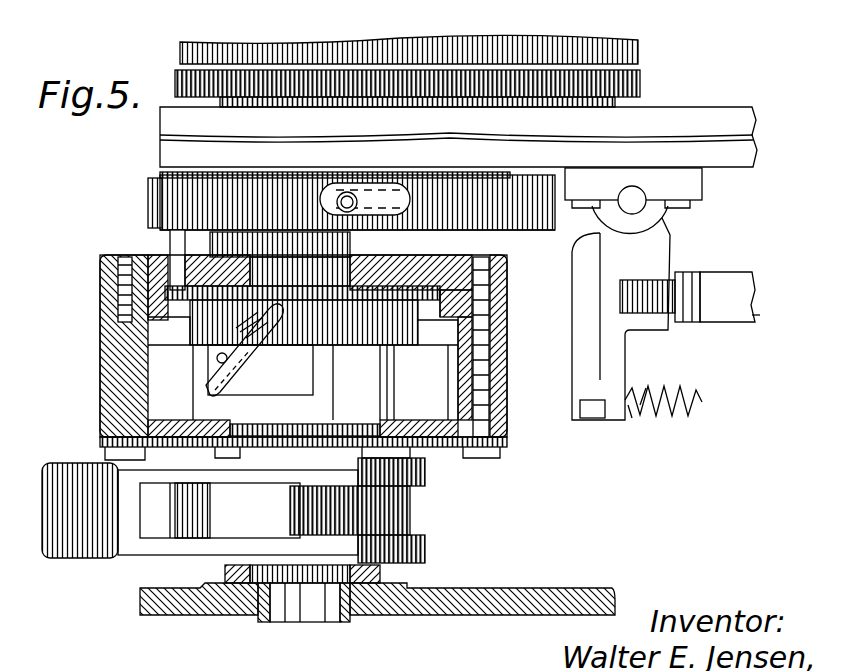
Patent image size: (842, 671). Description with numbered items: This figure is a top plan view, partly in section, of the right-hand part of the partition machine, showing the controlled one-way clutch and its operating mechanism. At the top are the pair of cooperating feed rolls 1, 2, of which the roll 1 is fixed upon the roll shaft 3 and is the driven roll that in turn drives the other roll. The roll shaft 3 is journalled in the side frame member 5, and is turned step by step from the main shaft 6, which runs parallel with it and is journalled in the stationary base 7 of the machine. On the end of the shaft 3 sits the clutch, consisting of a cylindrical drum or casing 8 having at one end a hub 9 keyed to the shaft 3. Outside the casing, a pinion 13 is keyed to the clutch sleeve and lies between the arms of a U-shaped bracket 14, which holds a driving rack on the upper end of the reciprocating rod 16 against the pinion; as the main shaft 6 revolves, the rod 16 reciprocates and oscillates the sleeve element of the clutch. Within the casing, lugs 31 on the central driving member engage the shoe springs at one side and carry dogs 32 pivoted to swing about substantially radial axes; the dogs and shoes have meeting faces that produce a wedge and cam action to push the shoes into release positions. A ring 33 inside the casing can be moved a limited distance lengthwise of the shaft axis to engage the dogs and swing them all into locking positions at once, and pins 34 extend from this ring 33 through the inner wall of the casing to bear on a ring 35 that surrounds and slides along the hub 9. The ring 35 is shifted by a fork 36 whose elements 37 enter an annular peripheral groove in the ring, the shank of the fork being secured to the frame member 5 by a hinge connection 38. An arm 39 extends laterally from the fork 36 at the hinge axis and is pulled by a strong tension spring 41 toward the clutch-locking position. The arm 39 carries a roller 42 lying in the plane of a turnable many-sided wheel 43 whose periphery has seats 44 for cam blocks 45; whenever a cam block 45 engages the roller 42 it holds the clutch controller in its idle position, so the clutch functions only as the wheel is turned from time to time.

The feed roll 1 is at (205, 52).
The feed roll 2 is at (485, 48).
The roll shaft 3 is at (348, 62).
The side frame member 5 is at (458, 137).
The main shaft 6 is at (96, 432).
The stationary base 7 is at (316, 26).
The drum or casing 8 is at (100, 362).
The hub 9 is at (302, 265).
The pinion 13 is at (400, 520).
The U-shaped bracket 14 is at (425, 470).
The reciprocating rod 16 is at (220, 510).
The lug 31 is at (260, 382).
The dog 32 is at (204, 386).
The ring 33 is at (418, 282).
The pin 34 is at (168, 246).
The ring 35 is at (152, 224).
The fork 36 is at (505, 222).
The fork element 37 is at (152, 198).
The hinge connection 38 is at (636, 200).
The arm 39 is at (605, 297).
The tension spring 41 is at (700, 400).
The roller 42 is at (655, 290).
The many-sided wheel 43 is at (758, 318).
The seat 44 is at (725, 292).
The cam block 45 is at (688, 285).